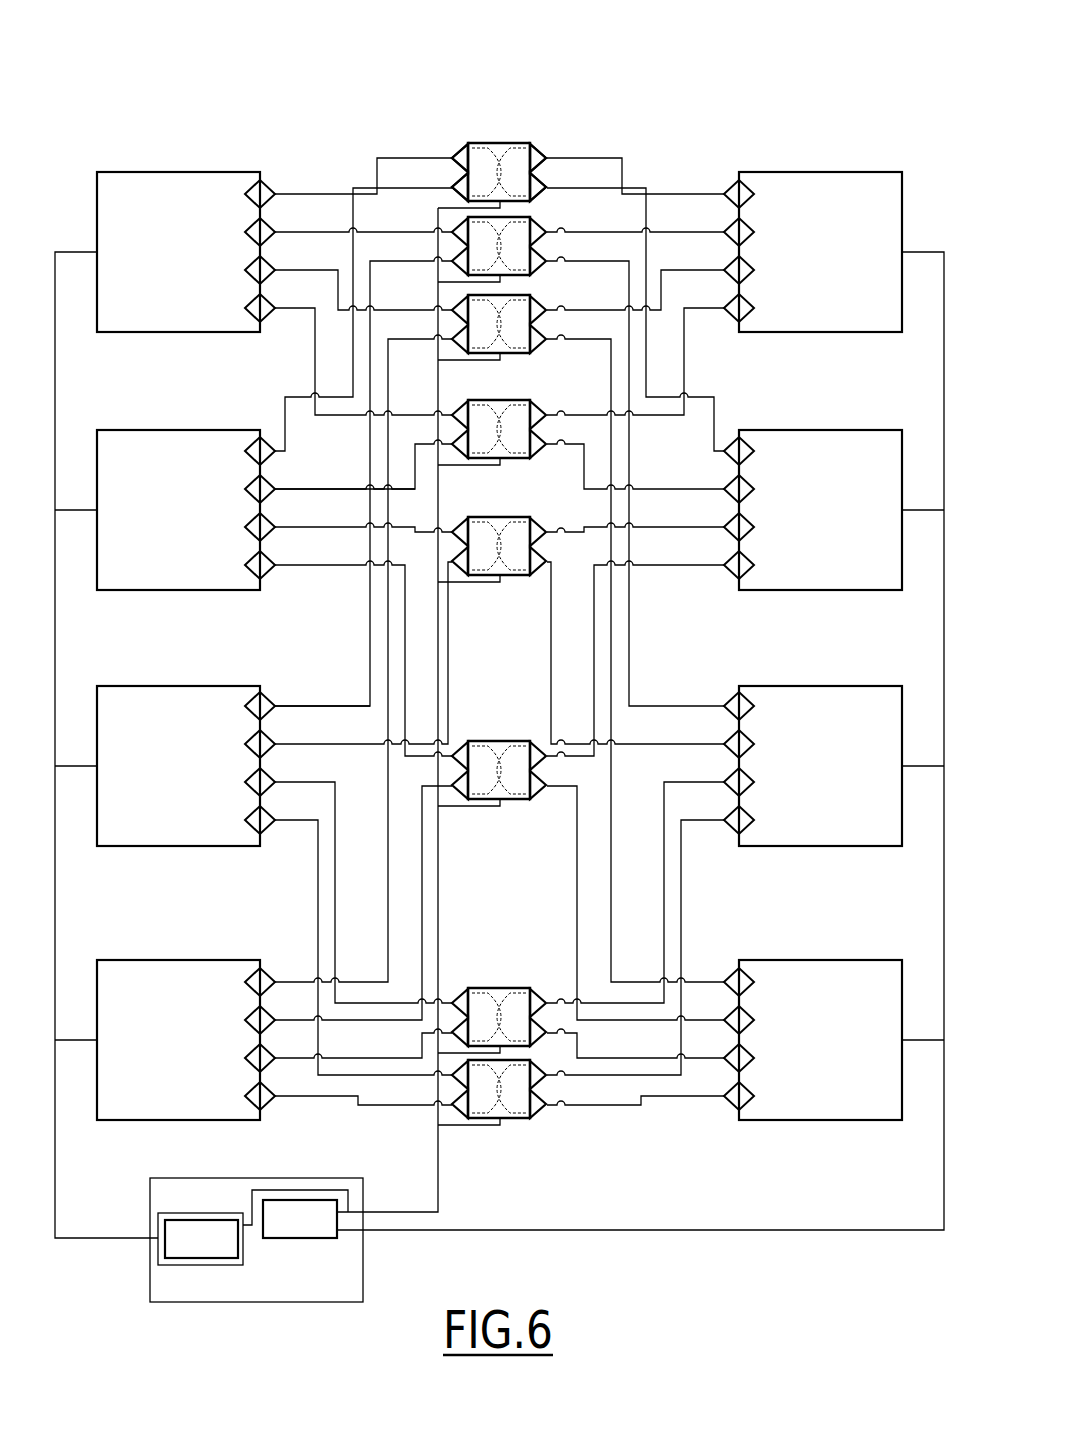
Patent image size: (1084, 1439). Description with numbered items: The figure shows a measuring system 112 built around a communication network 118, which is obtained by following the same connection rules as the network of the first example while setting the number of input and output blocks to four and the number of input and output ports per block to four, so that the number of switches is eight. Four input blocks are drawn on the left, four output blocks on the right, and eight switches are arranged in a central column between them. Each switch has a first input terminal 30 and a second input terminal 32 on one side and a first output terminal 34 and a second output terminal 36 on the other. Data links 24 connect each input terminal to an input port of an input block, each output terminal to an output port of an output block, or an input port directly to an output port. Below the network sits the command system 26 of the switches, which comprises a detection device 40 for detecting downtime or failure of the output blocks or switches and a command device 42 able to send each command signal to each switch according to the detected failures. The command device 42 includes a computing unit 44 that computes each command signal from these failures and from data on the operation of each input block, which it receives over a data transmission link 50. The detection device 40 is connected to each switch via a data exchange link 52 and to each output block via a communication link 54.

The communication network 118 is at (578, 74).
The first input terminal 30 is at (466, 155).
The second input terminal 32 is at (453, 188).
The first output terminal 34 is at (532, 154).
The second output terminal 36 is at (546, 188).
The data links 24 is at (306, 705).
The command system 26 is at (220, 1303).
The detection device 40 is at (300, 1219).
The command device 42 is at (158, 1266).
The computing unit 44 is at (201, 1239).
The data transmission link 50 is at (80, 1240).
The data exchange link 52 is at (438, 1186).
The communication link 54 is at (605, 1232).
The measuring system 112 is at (830, 1312).